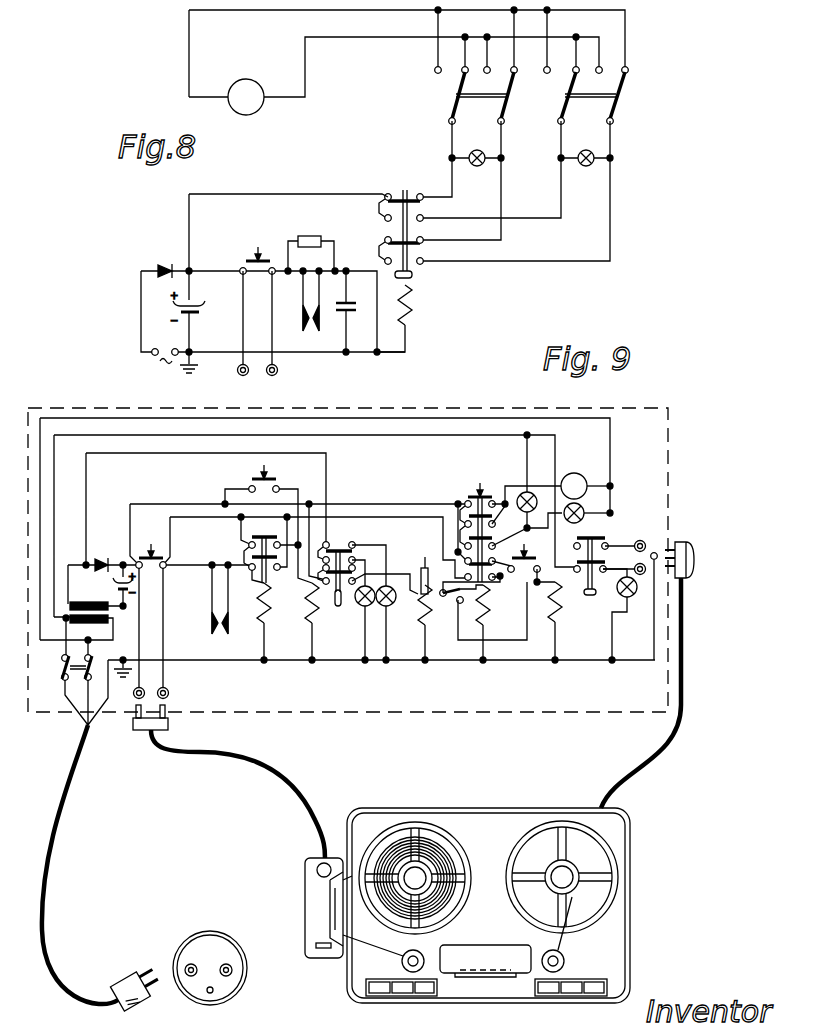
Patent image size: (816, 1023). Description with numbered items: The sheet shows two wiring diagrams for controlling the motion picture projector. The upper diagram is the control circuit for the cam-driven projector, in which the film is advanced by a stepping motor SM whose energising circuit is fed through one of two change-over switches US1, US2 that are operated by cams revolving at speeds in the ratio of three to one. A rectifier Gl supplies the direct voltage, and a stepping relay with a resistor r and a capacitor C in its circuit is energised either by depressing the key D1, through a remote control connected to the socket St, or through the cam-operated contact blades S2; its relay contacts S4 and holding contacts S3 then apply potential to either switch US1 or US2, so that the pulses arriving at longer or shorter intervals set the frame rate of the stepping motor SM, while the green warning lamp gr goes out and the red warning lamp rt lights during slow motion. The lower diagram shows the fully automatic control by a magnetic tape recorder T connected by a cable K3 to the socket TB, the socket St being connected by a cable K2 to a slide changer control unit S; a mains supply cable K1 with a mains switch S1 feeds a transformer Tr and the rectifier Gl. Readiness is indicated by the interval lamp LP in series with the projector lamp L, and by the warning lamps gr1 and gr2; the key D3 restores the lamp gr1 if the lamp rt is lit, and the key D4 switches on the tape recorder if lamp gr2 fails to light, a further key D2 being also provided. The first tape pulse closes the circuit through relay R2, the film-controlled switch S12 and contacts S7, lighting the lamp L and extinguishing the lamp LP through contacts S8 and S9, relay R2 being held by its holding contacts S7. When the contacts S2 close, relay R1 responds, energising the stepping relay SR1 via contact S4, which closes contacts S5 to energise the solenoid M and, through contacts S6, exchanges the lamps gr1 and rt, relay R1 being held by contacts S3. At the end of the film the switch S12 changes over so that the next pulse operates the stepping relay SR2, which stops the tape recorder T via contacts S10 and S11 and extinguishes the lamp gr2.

In FIG. 8, the stepping motor SM is at (246, 97).
In FIG. 8, the change-over switch US1 is at (481, 98).
In FIG. 8, the change-over switch US2 is at (591, 98).
In FIG. 8, the green warning lamp gr is at (462, 180).
In FIG. 8, the red warning lamp rt is at (516, 191).
In FIG. 9, the red warning lamp rt is at (362, 611).
In FIG. 8, the relay contacts S4 is at (410, 208).
In FIG. 9, the relay contacts S4 is at (265, 551).
In FIG. 8, the holding contacts S3 is at (410, 251).
In FIG. 9, the holding contacts S3 is at (255, 558).
In FIG. 8, the rectifier Gl is at (156, 263).
In FIG. 9, the rectifier Gl is at (100, 556).
In FIG. 8, the key D1 is at (252, 258).
In FIG. 9, the key D1 is at (151, 547).
In FIG. 8, the resistor r is at (311, 245).
In FIG. 8, the contact blades S2 is at (299, 301).
In FIG. 9, the contact blades S2 is at (219, 607).
In FIG. 8, the capacitor C is at (348, 313).
In FIG. 8, the socket St is at (258, 333).
In FIG. 9, the socket St is at (151, 633).
In FIG. 9, the transformer Tr is at (89, 604).
In FIG. 9, the key D3 is at (269, 475).
In FIG. 9, the contacts S6 is at (336, 566).
In FIG. 9, the contacts S5 is at (331, 575).
In FIG. 9, the green warning lamp gr1 is at (380, 604).
In FIG. 9, the film-controlled switch S12 is at (439, 610).
In FIG. 9, the key D2 is at (480, 486).
In FIG. 9, the contacts S9 is at (486, 519).
In FIG. 9, the contacts S8 is at (493, 539).
In FIG. 9, the holding contacts S7 is at (477, 545).
In FIG. 9, the key D4 is at (528, 556).
In FIG. 9, the interval lamp LP is at (539, 481).
In FIG. 9, the solenoid M is at (514, 581).
In FIG. 9, the projector lamp L is at (588, 507).
In FIG. 9, the contacts S10 is at (607, 560).
In FIG. 9, the contacts S11 is at (607, 561).
In FIG. 9, the socket TB is at (665, 591).
In FIG. 9, the green warning lamp gr2 is at (627, 616).
In FIG. 9, the mains switch S1 is at (65, 668).
In FIG. 9, the relay R1 is at (262, 636).
In FIG. 9, the stepping relay SR1 is at (311, 636).
In FIG. 9, the relay R2 is at (484, 637).
In FIG. 9, the stepping relay SR2 is at (551, 629).
In FIG. 9, the mains supply cable K1 is at (50, 922).
In FIG. 9, the cable K2 is at (260, 769).
In FIG. 9, the cable K3 is at (653, 733).
In FIG. 9, the magnetic tape recorder T is at (484, 825).
In FIG. 9, the slide changer control unit S is at (311, 886).